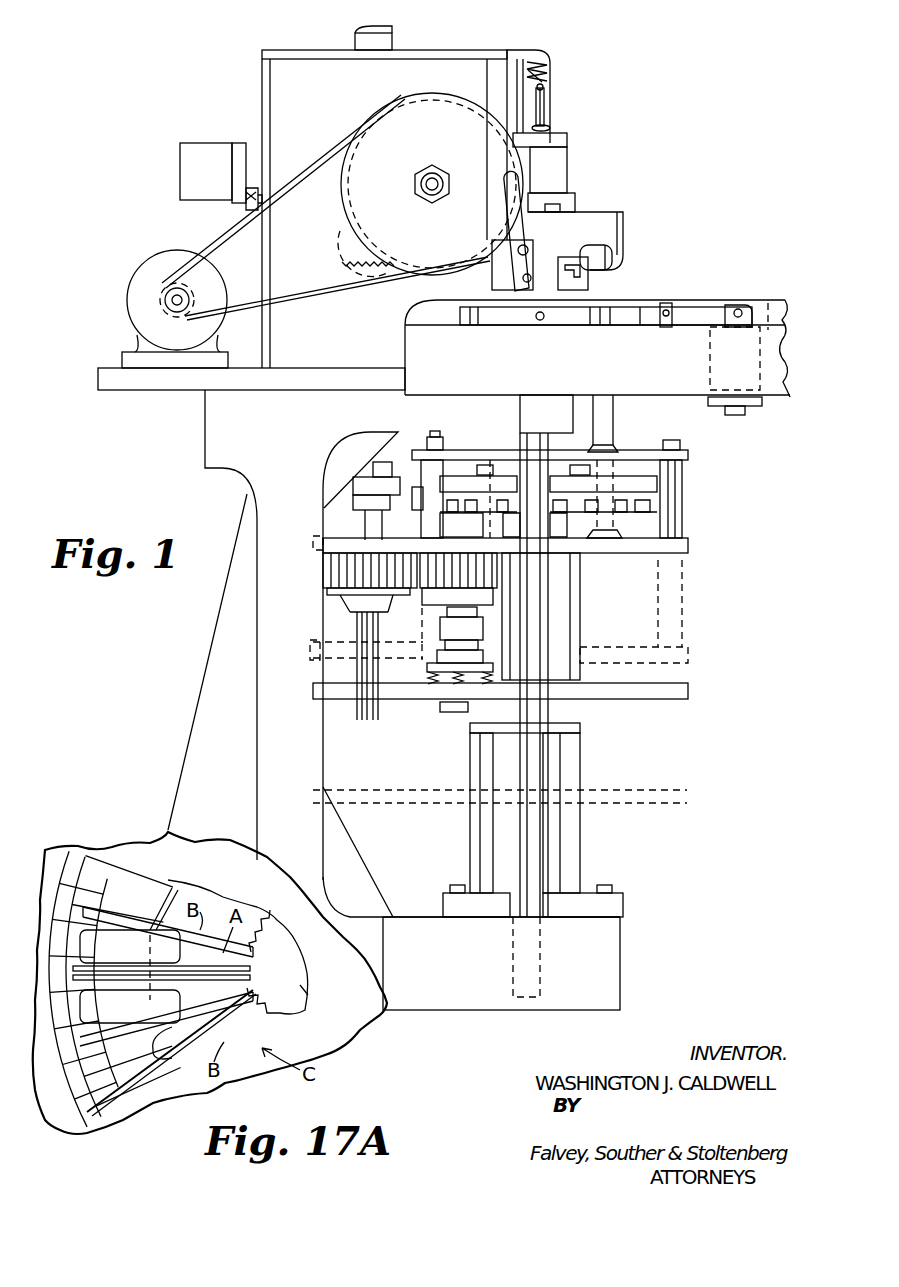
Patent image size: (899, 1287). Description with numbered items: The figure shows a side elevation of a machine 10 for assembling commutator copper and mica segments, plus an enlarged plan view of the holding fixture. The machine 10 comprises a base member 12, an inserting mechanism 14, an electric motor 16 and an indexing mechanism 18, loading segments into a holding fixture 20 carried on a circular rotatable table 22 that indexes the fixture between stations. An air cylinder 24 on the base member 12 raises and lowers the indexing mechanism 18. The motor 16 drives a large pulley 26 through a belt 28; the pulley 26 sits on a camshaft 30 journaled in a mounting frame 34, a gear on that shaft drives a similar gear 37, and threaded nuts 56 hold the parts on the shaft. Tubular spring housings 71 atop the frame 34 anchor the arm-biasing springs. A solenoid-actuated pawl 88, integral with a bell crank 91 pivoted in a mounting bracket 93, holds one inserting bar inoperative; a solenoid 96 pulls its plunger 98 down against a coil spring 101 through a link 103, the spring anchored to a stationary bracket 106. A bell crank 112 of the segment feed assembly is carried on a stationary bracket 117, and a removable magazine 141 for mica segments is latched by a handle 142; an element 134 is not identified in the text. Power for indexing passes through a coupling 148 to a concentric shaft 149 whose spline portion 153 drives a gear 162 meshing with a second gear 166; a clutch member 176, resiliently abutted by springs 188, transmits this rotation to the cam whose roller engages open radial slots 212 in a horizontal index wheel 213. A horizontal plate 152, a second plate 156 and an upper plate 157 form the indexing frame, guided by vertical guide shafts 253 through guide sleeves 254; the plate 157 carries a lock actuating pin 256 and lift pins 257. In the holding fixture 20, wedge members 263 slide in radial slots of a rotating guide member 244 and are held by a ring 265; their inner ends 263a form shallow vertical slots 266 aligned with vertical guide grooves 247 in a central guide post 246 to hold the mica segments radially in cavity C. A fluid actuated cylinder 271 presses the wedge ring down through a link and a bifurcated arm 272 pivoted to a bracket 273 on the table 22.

In FIG. 1, the machine 10 is at (163, 233).
In FIG. 1, the base member 12 is at (177, 777).
In FIG. 1, the inserting mechanism 14 is at (451, 59).
In FIG. 1, the electric motor 16 is at (135, 303).
In FIG. 1, the indexing mechanism 18 is at (710, 509).
In FIG. 1, the holding fixture 20 is at (477, 318).
In FIG. 1, the circular rotatable table 22 is at (780, 345).
In FIG. 1, the air cylinder 24 is at (572, 860).
In FIG. 1, the large pulley 26 is at (382, 118).
In FIG. 1, the belt 28 is at (313, 168).
In FIG. 1, the camshaft 30 is at (430, 190).
In FIG. 1, the mounting frame 34 is at (301, 50).
In FIG. 1, the gear 37 is at (340, 240).
In FIG. 1, the threaded nuts 56 is at (431, 176).
In FIG. 1, the tubular spring housings 71 is at (368, 38).
In FIG. 1, the solenoid-actuated pawl 88 is at (548, 70).
In FIG. 1, the bell crank 91 is at (548, 88).
In FIG. 1, the mounting bracket 93 is at (565, 140).
In FIG. 1, the solenoid 96 is at (562, 171).
In FIG. 1, the actuating plunger 98 is at (550, 128).
In FIG. 1, the coil spring 101 is at (545, 80).
In FIG. 1, the link 103 is at (550, 110).
In FIG. 1, the stationary bracket 106 is at (520, 55).
In FIG. 1, the bell crank 112 is at (605, 252).
In FIG. 1, the stationary bracket 117 is at (612, 225).
In FIG. 1, the control box 134 is at (196, 150).
In FIG. 1, the removable magazine 141 is at (590, 280).
In FIG. 1, the handle 142 is at (510, 178).
In FIG. 1, the coupling 148 is at (348, 488).
In FIG. 1, the concentric shaft 149 is at (360, 520).
In FIG. 1, the horizontal plate 152 is at (690, 553).
In FIG. 1, the spline portion 153 is at (357, 722).
In FIG. 1, the second horizontal mounting plate 156 is at (685, 690).
In FIG. 1, the upper third plate 157 is at (690, 455).
In FIG. 1, the gear 162 is at (328, 575).
In FIG. 1, the second gear 166 is at (480, 580).
In FIG. 1, the clutch member 176 is at (440, 627).
In FIG. 1, the springs 188 is at (484, 680).
In FIG. 1, the open radial slots 212 is at (650, 507).
In FIG. 1, the horizontal index wheel 213 is at (625, 490).
In FIG. 17A, the rotating guide member 244 is at (86, 855).
In FIG. 1, the guide post 246 is at (542, 320).
In FIG. 17A, the guide post 246 is at (302, 1032).
In FIG. 17A, the vertical guide grooves 247 is at (308, 995).
In FIG. 1, the vertical guide shafts 253 is at (530, 445).
In FIG. 1, the guide sleeves 254 is at (565, 610).
In FIG. 1, the lock actuating pin 256 is at (433, 438).
In FIG. 1, the lift pins 257 is at (612, 405).
In FIG. 17A, the wedge members 263 is at (127, 890).
In FIG. 17A, the inner ends 263a is at (157, 1040).
In FIG. 17A, the ring 265 is at (62, 860).
In FIG. 17A, the shallow vertical slots 266 is at (155, 890).
In FIG. 1, the fluid actuated cylinder 271 is at (770, 330).
In FIG. 1, the bifurcated arm 272 is at (640, 312).
In FIG. 1, the bracket 273 is at (680, 310).